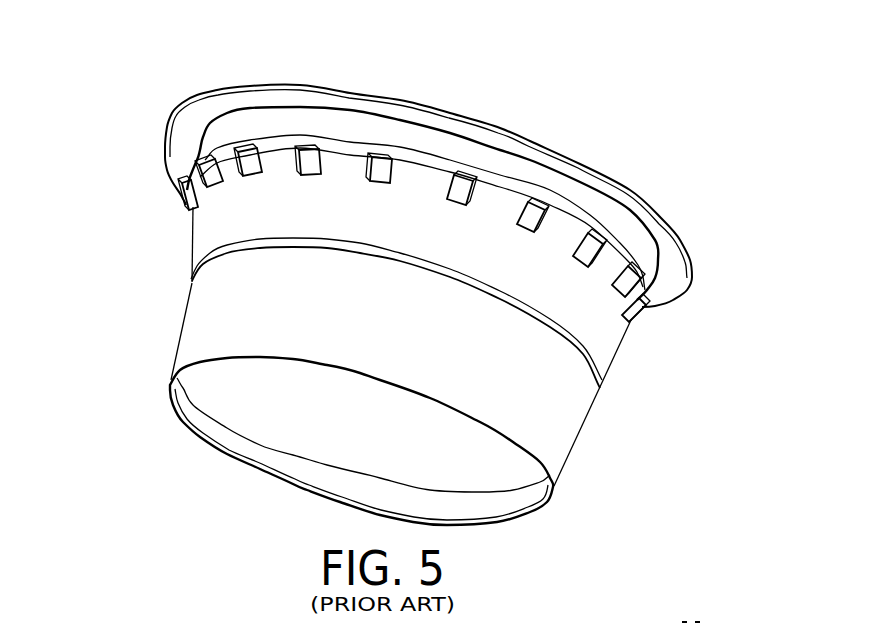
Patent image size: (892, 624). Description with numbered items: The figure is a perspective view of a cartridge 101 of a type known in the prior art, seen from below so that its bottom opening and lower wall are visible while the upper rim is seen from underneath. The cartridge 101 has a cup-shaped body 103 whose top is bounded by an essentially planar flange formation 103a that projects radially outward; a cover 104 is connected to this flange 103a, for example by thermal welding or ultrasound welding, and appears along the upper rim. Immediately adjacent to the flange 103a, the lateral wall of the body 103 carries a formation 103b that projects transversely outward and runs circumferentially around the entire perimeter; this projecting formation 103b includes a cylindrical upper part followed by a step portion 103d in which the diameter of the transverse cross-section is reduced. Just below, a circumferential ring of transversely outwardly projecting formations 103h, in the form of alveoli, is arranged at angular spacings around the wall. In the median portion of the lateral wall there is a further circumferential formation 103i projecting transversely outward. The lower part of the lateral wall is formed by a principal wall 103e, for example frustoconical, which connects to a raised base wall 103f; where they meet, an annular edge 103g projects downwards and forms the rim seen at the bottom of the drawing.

The cartridge 101 is at (627, 119).
The cup-shaped body 103 is at (578, 435).
The flange formation 103a is at (193, 130).
The projecting formation 103b is at (277, 125).
The step portion 103d is at (200, 155).
The principal wall 103e is at (193, 307).
The raised base wall 103f is at (463, 467).
The annular edge 103g is at (237, 438).
The formations (alveoli) 103h is at (185, 196).
The circumferential formation 103i is at (200, 223).
The cover 104 is at (497, 123).